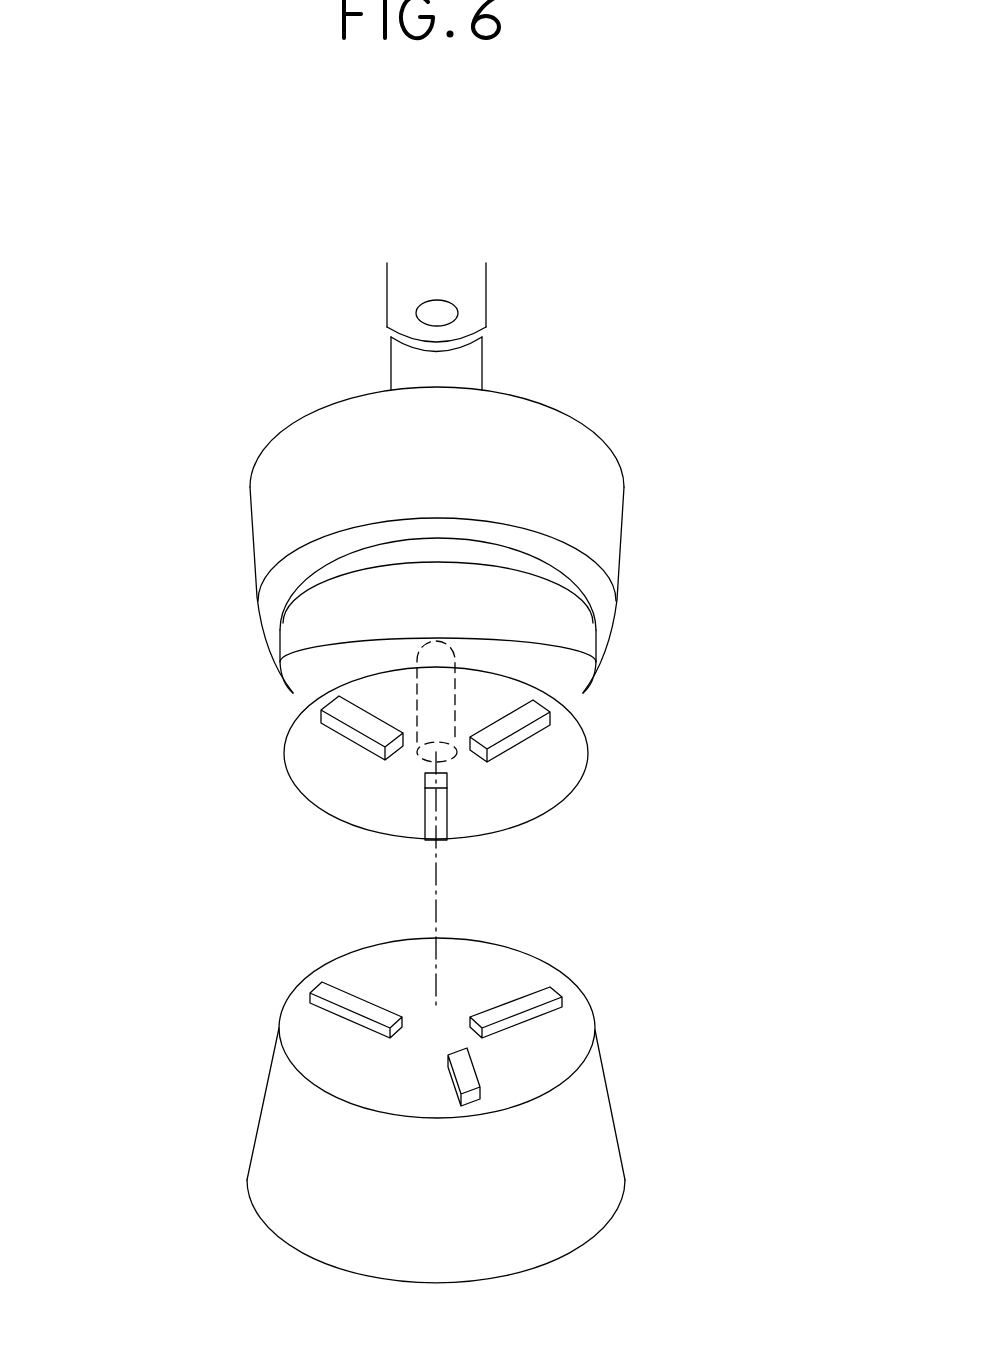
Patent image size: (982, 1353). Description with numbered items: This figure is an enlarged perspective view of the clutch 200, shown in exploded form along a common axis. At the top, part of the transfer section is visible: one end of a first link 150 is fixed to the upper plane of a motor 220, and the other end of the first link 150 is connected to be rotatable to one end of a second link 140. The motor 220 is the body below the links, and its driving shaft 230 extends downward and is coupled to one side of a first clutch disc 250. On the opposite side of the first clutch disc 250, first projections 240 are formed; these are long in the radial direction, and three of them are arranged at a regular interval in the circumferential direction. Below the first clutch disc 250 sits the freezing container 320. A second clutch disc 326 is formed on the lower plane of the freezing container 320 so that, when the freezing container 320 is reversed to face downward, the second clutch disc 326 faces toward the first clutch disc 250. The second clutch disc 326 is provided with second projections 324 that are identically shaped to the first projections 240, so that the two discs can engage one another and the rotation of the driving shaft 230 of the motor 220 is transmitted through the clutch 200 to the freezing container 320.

The second link 140 is at (483, 288).
The first link 150 is at (400, 368).
The clutch 200 is at (691, 491).
The motor 220 is at (282, 503).
The driving shaft 230 is at (425, 688).
The first projections 240 is at (513, 743).
The first clutch disc 250 is at (310, 784).
The freezing container 320 is at (603, 1158).
The second projections 324 is at (553, 990).
The second clutch disc 326 is at (308, 1035).